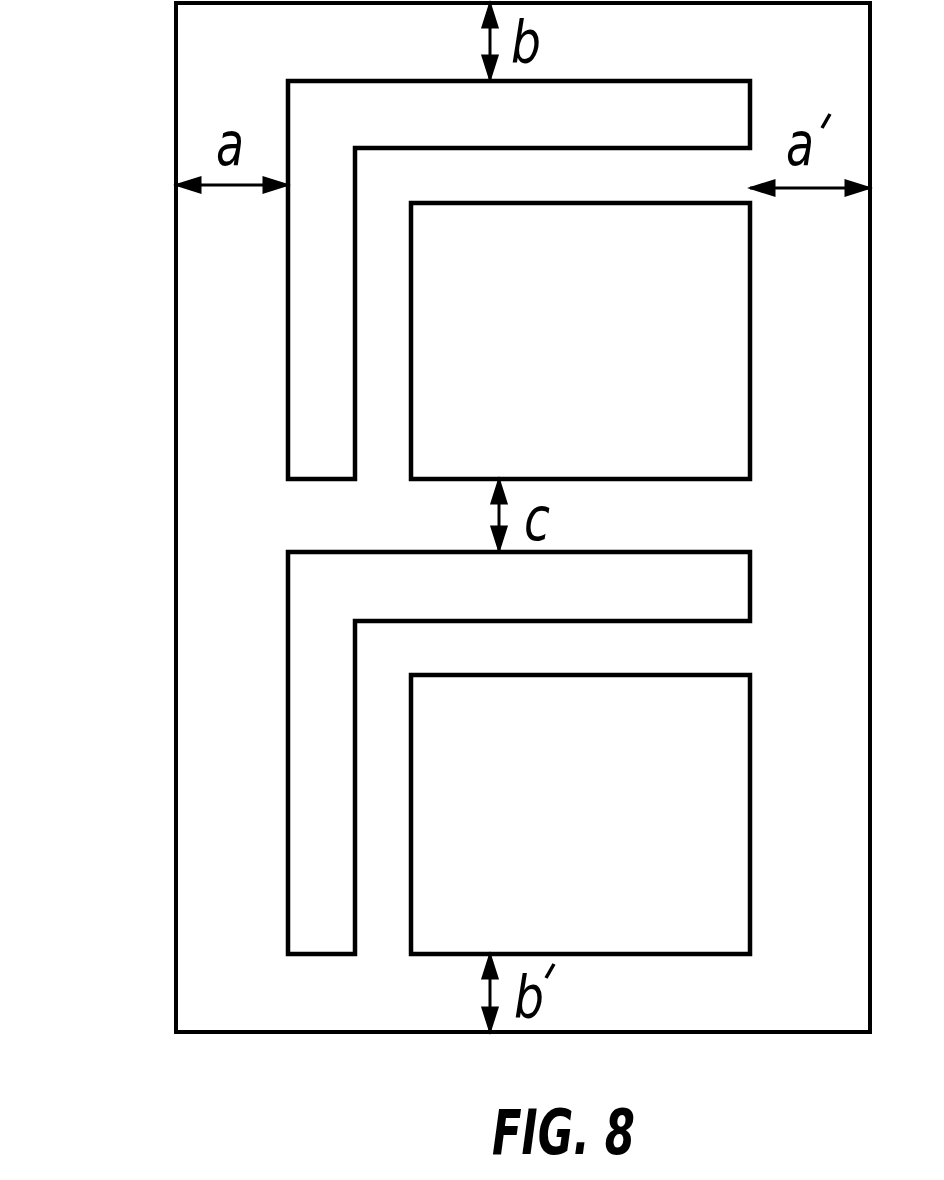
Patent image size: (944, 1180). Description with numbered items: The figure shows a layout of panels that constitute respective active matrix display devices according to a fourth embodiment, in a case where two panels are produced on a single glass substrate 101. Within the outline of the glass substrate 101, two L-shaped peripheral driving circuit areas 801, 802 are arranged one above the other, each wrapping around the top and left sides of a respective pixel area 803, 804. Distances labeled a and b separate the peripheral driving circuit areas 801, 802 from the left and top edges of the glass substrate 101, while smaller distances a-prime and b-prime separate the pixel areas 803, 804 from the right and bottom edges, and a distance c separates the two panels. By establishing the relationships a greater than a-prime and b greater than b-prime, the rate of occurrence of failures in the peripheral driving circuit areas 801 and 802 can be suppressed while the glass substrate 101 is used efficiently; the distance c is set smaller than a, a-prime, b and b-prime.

The glass substrate 101 is at (453, 517).
The peripheral driving circuit area 801 is at (405, 280).
The peripheral driving circuit area 802 is at (405, 723).
The pixel area 803 is at (621, 433).
The pixel area 804 is at (621, 760).